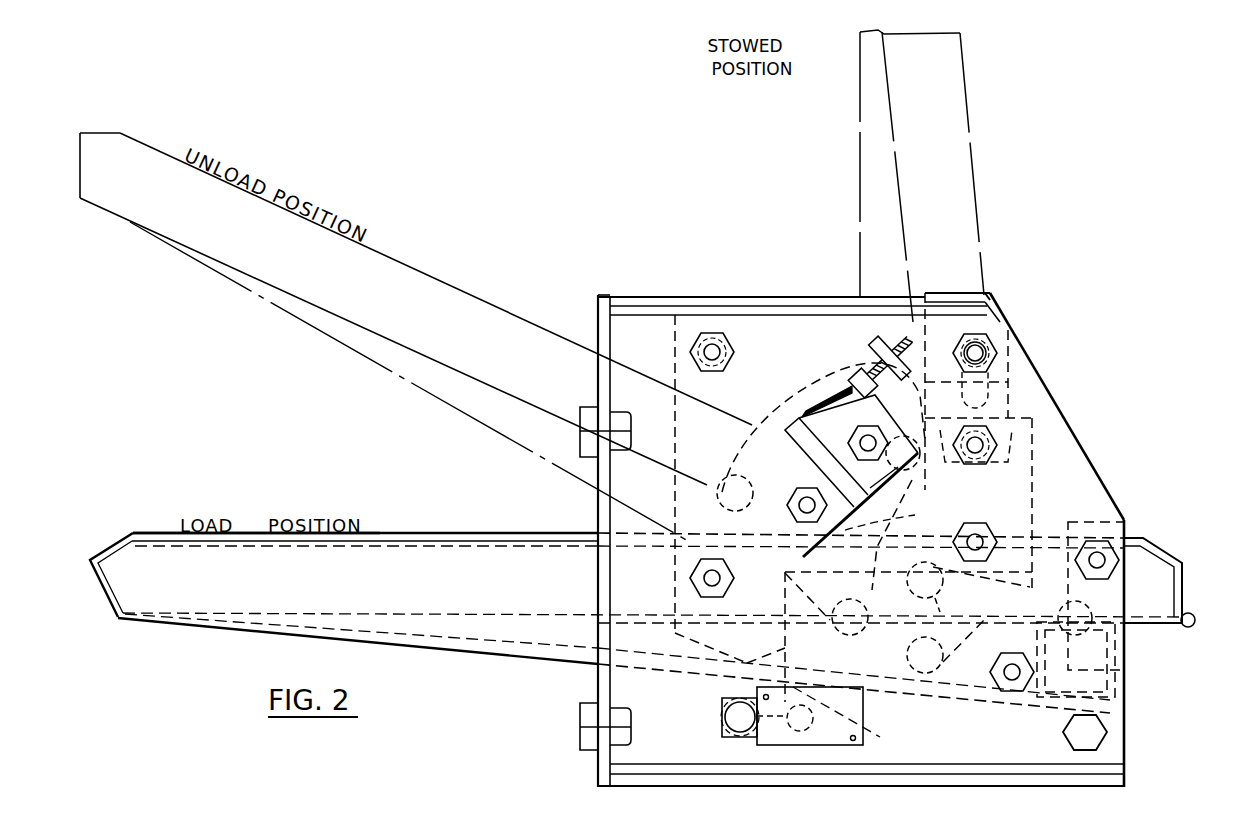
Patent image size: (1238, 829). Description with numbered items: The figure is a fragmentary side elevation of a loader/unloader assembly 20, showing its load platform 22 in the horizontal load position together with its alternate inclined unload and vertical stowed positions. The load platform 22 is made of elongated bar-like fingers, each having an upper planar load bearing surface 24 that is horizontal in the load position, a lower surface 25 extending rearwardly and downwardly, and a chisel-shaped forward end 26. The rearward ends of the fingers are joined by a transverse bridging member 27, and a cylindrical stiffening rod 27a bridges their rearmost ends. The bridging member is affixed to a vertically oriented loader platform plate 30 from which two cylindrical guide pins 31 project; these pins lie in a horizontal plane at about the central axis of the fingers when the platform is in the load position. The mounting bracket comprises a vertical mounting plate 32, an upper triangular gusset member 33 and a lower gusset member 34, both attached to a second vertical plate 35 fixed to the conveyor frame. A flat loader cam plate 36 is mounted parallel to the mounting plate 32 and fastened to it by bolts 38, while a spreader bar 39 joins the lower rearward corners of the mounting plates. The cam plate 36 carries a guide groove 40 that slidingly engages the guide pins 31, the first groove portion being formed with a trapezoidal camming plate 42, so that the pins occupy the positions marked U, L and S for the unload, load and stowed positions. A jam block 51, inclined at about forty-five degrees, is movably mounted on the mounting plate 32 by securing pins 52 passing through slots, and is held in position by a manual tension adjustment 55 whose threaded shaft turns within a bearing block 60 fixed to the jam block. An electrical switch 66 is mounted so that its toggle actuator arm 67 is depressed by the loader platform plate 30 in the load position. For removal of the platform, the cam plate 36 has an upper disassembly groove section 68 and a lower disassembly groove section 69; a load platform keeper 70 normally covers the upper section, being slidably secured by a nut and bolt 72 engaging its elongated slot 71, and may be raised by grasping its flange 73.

The loader/unloader assembly 20 is at (678, 276).
The load platform 22 is at (398, 526).
The upper planar load bearing surface 24 is at (253, 530).
The lower surface of fingers 25 is at (380, 645).
The chisel-shaped forward end 26 is at (95, 555).
The bridging member 27 is at (1115, 672).
The stiffening rod 27a is at (1186, 628).
The loader platform plate 30 is at (783, 651).
The guide pins 31 is at (733, 475).
The mounting plate 32 is at (645, 325).
The upper gusset member 33 is at (697, 300).
The lower gusset member 34 is at (700, 773).
The second vertically oriented plate 35 is at (597, 567).
The loader cam plate 36 is at (745, 418).
The bolts 38 is at (722, 352).
The spreader bar 39 is at (1107, 732).
The guide groove 40 is at (805, 372).
The camming plate 42 is at (895, 530).
The jam block 51 is at (905, 470).
The securing pins 52 is at (800, 508).
The tension adjustment 55 is at (846, 365).
The bearing block 60 is at (800, 428).
The electrical switch 66 is at (866, 720).
The toggle actuator arm 67 is at (856, 740).
The upper disassembly groove section 68 is at (1012, 405).
The lower disassembly groove section 69 is at (1050, 540).
The load platform keeper 70 is at (988, 298).
The elongated slot 71 is at (1010, 365).
The nut and bolt 72 is at (980, 345).
The flange 73 is at (937, 293).